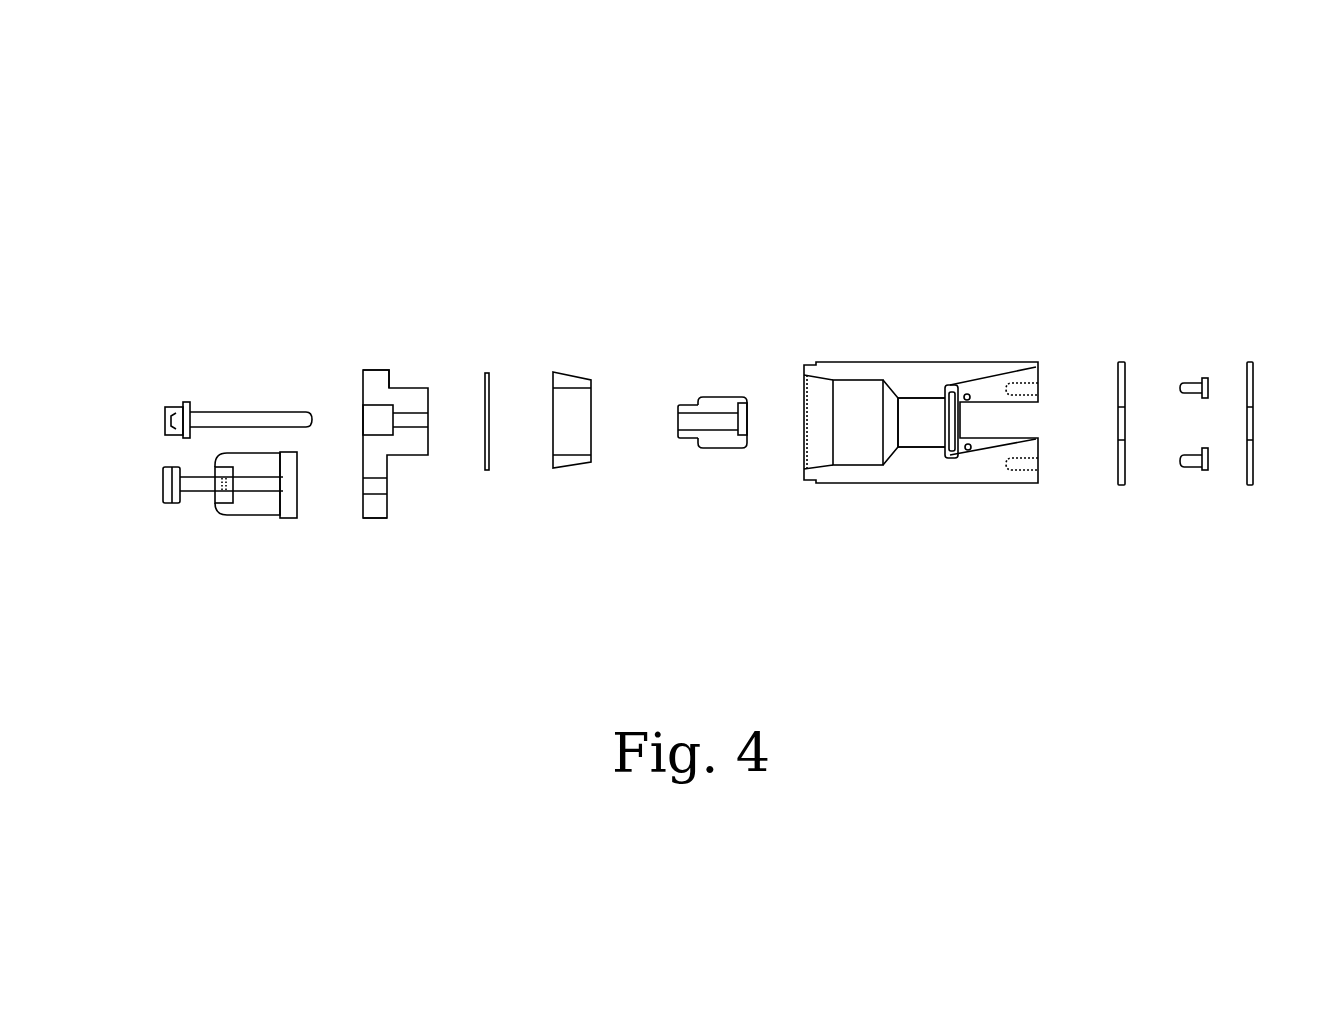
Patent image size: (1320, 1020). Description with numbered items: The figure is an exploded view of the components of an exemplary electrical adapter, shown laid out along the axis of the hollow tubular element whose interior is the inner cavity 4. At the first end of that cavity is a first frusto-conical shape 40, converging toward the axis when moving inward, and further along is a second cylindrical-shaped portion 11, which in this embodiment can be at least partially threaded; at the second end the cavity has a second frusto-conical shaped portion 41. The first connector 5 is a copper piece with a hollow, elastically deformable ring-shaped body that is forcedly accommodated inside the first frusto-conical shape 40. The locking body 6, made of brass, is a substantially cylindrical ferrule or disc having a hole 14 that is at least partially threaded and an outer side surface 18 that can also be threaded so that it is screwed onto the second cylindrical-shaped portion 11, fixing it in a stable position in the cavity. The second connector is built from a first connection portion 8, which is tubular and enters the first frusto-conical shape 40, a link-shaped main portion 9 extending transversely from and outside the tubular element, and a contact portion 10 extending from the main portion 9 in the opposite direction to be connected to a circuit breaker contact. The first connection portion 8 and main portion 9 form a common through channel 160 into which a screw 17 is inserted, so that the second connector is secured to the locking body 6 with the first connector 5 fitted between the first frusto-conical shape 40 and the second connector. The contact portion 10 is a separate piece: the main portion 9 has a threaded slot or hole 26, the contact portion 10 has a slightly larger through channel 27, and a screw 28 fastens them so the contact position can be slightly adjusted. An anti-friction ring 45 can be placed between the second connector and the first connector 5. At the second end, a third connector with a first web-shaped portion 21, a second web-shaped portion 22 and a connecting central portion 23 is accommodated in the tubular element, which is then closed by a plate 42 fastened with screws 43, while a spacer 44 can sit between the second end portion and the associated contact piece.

The inner cavity 4 is at (925, 413).
The first connector 5 is at (577, 440).
The locking body 6 is at (699, 423).
The first connection portion 8 is at (384, 376).
The main portion 9 is at (377, 383).
The contact portion 10 is at (268, 505).
The second cylindrical-shaped portion 11 is at (918, 397).
The hole 14 is at (690, 422).
The screw 17 is at (222, 415).
The outer side surface 18 is at (720, 395).
The first web-shaped portion 21 is at (995, 397).
The second web-shaped portion 22 is at (1000, 446).
The central portion 23 is at (952, 432).
The threaded slot or hole 26 is at (377, 488).
The through channel 27 is at (255, 485).
The screw 28 is at (200, 490).
The first frusto-conical shape 40 is at (823, 463).
The second frusto-conical shaped portion 41 is at (950, 383).
The plate 42 is at (1128, 471).
The screws 43 is at (1190, 455).
The spacer 44 is at (1255, 415).
The anti-friction ring 45 is at (489, 420).
The common through channel 160 is at (378, 420).